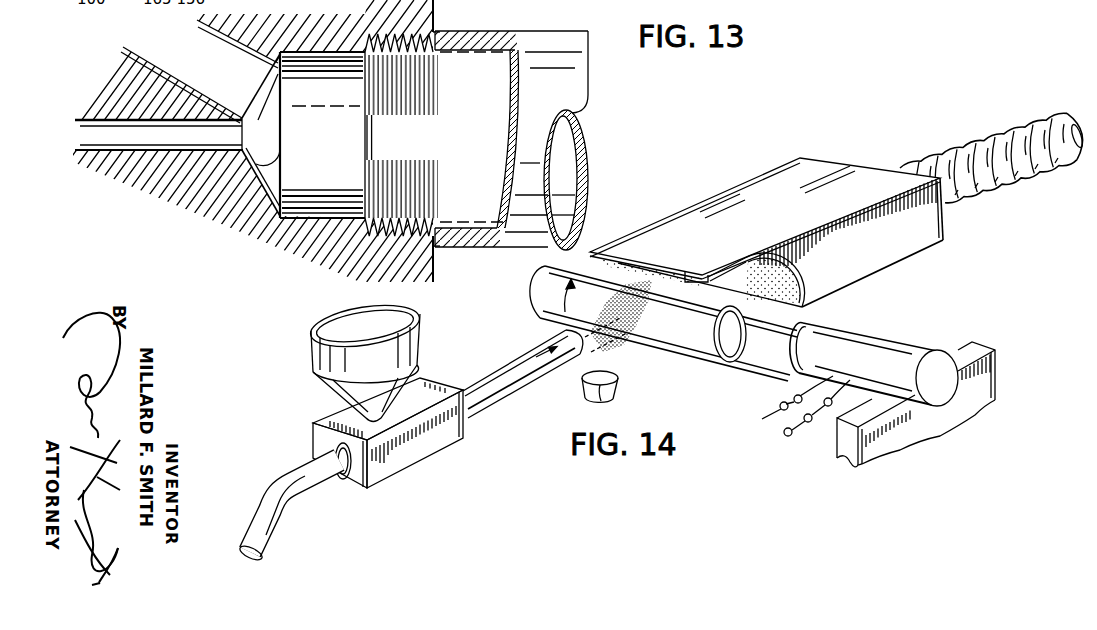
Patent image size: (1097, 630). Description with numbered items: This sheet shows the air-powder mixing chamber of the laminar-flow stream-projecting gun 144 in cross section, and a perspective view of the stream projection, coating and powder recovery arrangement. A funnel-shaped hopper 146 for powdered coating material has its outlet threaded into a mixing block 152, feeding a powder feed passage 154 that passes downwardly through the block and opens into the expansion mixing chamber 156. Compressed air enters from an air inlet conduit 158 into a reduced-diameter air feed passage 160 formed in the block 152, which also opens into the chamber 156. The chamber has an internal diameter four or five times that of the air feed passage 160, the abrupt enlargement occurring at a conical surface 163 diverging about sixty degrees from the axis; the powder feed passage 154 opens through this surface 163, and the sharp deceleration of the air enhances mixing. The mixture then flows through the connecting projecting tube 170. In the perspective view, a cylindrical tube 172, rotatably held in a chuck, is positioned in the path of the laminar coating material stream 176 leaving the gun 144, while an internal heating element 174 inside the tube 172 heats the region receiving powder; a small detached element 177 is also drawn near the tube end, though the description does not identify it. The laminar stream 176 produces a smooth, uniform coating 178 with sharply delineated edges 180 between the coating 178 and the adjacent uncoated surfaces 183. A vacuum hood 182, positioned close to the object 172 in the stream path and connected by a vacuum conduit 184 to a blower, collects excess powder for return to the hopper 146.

In FIG. 14, the laminar-flow stream-projecting gun 144 is at (450, 364).
In FIG. 14, the funnel-shaped hopper 146 is at (322, 387).
In FIG. 13, the mixing block 152 is at (424, 18).
In FIG. 14, the mixing block 152 is at (398, 463).
In FIG. 13, the powder feed passage 154 is at (205, 67).
In FIG. 13, the expansion mixing chamber 156 is at (328, 136).
In FIG. 14, the air inlet conduit 158 is at (290, 475).
In FIG. 13, the air feed passage 160 is at (160, 146).
In FIG. 13, the conical surface 163 is at (282, 152).
In FIG. 13, the projecting tube 170 is at (526, 31).
In FIG. 14, the projecting tube 170 is at (502, 368).
In FIG. 14, the cylindrical tube 172 is at (710, 368).
In FIG. 14, the internal heating element 174 is at (776, 347).
In FIG. 14, the coating material stream 176 is at (609, 336).
In FIG. 14, the end cap 177 is at (573, 388).
In FIG. 14, the coating 178 is at (611, 293).
In FIG. 14, the sharply delineated edges 180 is at (637, 305).
In FIG. 14, the vacuum hood 182 is at (737, 192).
In FIG. 14, the uncoated surfaces 183 is at (556, 266).
In FIG. 14, the vacuum conduit 184 is at (978, 143).